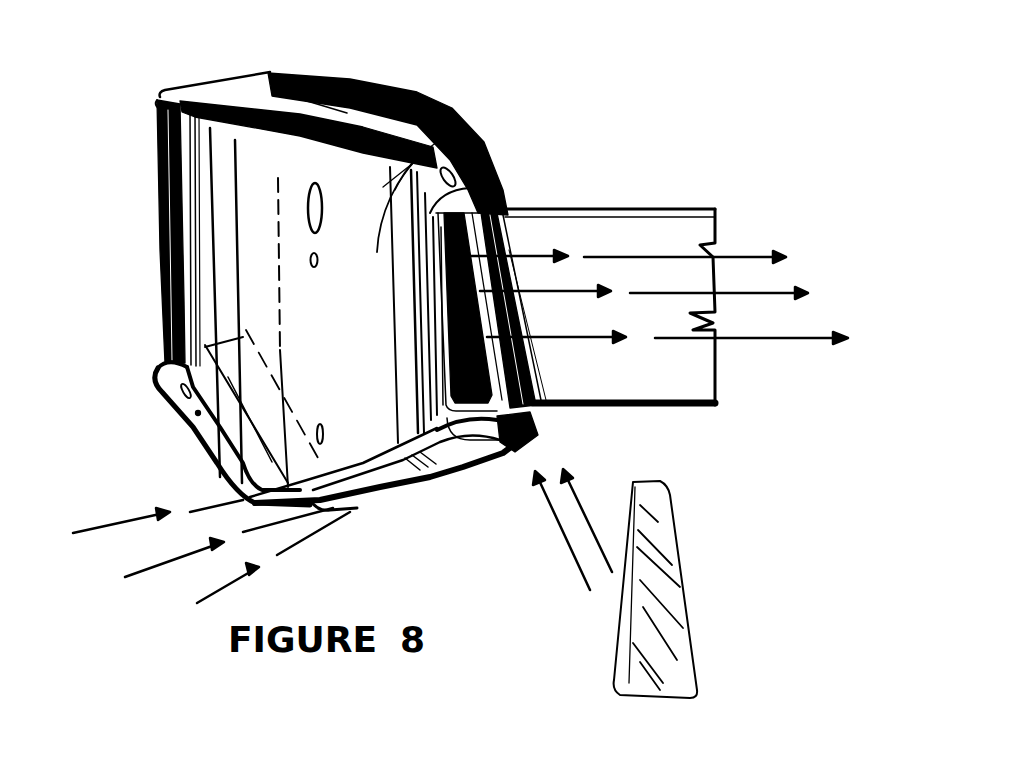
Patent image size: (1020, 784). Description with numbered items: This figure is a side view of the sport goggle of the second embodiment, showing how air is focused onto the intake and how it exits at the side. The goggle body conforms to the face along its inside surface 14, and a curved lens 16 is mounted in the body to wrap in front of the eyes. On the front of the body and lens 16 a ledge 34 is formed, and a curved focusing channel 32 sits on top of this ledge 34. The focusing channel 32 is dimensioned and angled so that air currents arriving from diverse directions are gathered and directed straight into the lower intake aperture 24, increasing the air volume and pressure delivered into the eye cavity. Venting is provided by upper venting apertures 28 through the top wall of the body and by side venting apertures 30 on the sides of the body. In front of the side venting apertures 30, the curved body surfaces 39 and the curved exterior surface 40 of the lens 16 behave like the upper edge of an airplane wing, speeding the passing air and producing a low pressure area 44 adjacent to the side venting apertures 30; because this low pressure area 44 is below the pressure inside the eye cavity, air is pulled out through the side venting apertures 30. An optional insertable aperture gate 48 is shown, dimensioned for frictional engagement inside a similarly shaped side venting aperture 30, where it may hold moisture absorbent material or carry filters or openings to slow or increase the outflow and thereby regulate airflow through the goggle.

The inside surface 14 is at (441, 97).
The lens 16 is at (352, 354).
The lower intake aperture 24 is at (527, 443).
The upper venting apertures 28 is at (287, 65).
The side venting apertures 30 is at (503, 197).
The focusing channel 32 is at (443, 490).
The ledge 34 is at (213, 453).
The curved body surfaces 39 is at (497, 163).
The exterior surface of the lens 40 is at (460, 112).
The low pressure area 44 is at (567, 278).
The insertable aperture gate 48 is at (668, 547).